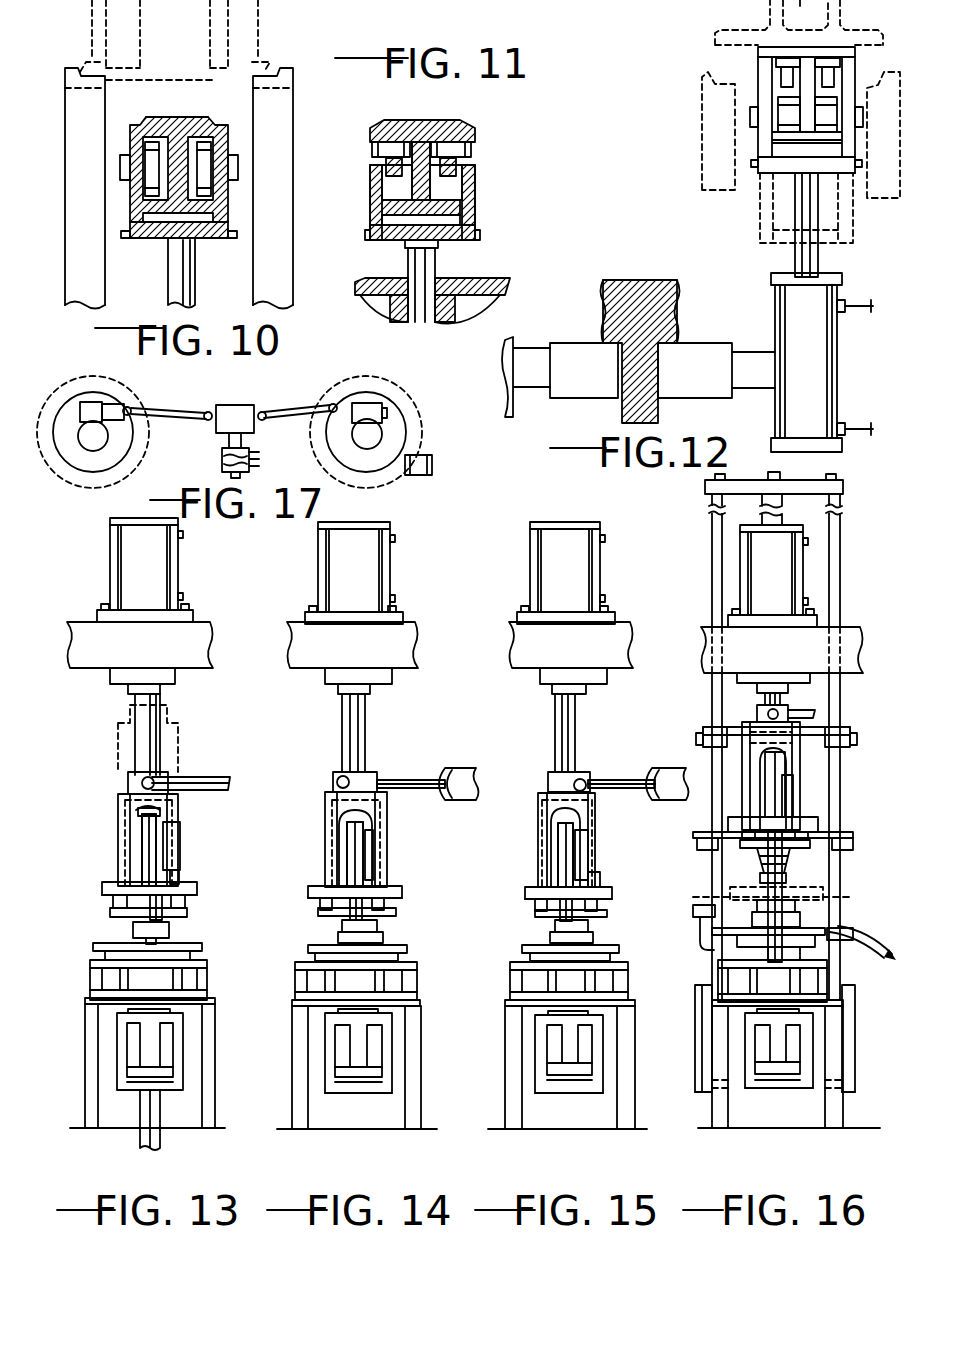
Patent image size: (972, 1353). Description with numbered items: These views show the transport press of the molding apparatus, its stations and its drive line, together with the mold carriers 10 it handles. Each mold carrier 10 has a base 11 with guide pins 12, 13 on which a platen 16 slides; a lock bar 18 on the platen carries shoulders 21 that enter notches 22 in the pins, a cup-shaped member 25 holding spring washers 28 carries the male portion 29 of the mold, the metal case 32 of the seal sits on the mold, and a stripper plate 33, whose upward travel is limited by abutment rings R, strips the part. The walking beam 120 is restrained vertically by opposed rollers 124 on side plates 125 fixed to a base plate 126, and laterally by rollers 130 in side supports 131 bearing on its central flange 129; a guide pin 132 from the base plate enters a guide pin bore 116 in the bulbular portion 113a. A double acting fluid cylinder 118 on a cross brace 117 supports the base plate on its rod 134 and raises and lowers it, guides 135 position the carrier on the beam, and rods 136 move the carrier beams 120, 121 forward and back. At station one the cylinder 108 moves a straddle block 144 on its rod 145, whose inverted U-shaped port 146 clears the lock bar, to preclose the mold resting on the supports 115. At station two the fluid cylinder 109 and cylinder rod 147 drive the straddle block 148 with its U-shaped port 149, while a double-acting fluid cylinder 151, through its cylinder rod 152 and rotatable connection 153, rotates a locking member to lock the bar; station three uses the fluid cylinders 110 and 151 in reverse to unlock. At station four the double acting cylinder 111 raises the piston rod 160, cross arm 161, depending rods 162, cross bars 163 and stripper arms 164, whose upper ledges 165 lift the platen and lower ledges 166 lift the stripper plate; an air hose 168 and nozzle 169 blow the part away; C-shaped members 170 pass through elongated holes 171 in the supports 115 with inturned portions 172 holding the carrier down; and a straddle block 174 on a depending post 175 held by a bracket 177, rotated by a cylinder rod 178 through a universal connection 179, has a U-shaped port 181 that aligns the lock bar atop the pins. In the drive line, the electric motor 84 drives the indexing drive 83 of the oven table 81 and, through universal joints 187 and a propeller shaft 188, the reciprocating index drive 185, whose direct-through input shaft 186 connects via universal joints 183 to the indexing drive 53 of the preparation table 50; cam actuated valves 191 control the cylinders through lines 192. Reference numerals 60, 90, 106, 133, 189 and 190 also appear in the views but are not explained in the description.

In FIG. 13, the mold carrier 10 is at (96, 949).
In FIG. 14, the mold carrier 10 is at (318, 945).
In FIG. 15, the mold carrier 10 is at (531, 943).
In FIG. 13, the base 11 is at (207, 978).
In FIG. 14, the base 11 is at (417, 983).
In FIG. 15, the base 11 is at (510, 982).
In FIG. 16, the base 11 is at (830, 976).
In FIG. 13, the guide pin 12 is at (148, 850).
In FIG. 14, the guide pin 12 is at (357, 841).
In FIG. 15, the guide pin 12 is at (565, 861).
In FIG. 13, the guide pin 13 is at (149, 850).
In FIG. 14, the guide pin 13 is at (355, 854).
In FIG. 15, the guide pin 13 is at (565, 855).
In FIG. 13, the platen 16 is at (197, 888).
In FIG. 14, the platen 16 is at (404, 892).
In FIG. 15, the platen 16 is at (612, 890).
In FIG. 16, the platen 16 is at (818, 826).
In FIG. 13, the lock bar 18 is at (182, 846).
In FIG. 14, the lock bar 18 is at (347, 866).
In FIG. 15, the lock bar 18 is at (588, 851).
In FIG. 16, the lock bar 18 is at (793, 772).
In FIG. 13, the shoulders 21 is at (192, 882).
In FIG. 14, the shoulders 21 is at (370, 884).
In FIG. 15, the shoulders 21 is at (600, 878).
In FIG. 16, the shoulders 21 is at (790, 810).
In FIG. 14, the notches 22 is at (386, 845).
In FIG. 16, the cup-shaped member 25 is at (764, 860).
In FIG. 13, the spring washers 28 is at (112, 903).
In FIG. 14, the spring washers 28 is at (320, 904).
In FIG. 16, the male portion 29 is at (760, 879).
In FIG. 13, the metal case 32 is at (133, 932).
In FIG. 14, the metal case 32 is at (383, 936).
In FIG. 15, the metal case 32 is at (593, 938).
In FIG. 16, the metal case 32 is at (768, 912).
In FIG. 15, the stripper plate 33 is at (522, 950).
In FIG. 16, the stripper plate 33 is at (712, 931).
In FIG. 17, the preparation table 50 is at (84, 490).
In FIG. 17, the indexing drive 53 is at (108, 446).
In FIG. 13, the drive coupling 60 is at (183, 1075).
In FIG. 14, the drive coupling 60 is at (392, 1074).
In FIG. 17, the oven table 81 is at (424, 428).
In FIG. 17, the indexing drive 83 is at (372, 470).
In FIG. 17, the electric motor 84 is at (426, 475).
In FIG. 15, the drive coupling 90 is at (534, 1062).
In FIG. 16, the drive coupling 90 is at (742, 1047).
In FIG. 13, the support plate 106 is at (160, 656).
In FIG. 14, the support plate 106 is at (370, 656).
In FIG. 15, the support plate 106 is at (586, 656).
In FIG. 16, the support plate 106 is at (798, 661).
In FIG. 13, the cylinder 108 is at (162, 582).
In FIG. 14, the fluid cylinder 109 is at (369, 584).
In FIG. 15, the fluid cylinder 110 is at (580, 584).
In FIG. 16, the double acting cylinder 111 is at (788, 587).
In FIG. 11, the bulbular portion 113a is at (462, 280).
In FIG. 10, the supports 115 is at (65, 76).
In FIG. 12, the supports 115 is at (700, 81).
In FIG. 13, the supports 115 is at (85, 1000).
In FIG. 14, the supports 115 is at (292, 1002).
In FIG. 15, the supports 115 is at (505, 1003).
In FIG. 16, the supports 115 is at (712, 1003).
In FIG. 11, the guide pin bore 116 is at (410, 305).
In FIG. 12, the cross braces 117 is at (622, 408).
In FIG. 12, the double acting fluid cylinder 118 is at (775, 320).
In FIG. 10, the walking beam 120 is at (176, 118).
In FIG. 11, the walking beam 120 is at (430, 117).
In FIG. 12, the walking beam 120 is at (779, 37).
In FIG. 13, the walking beam 120 is at (118, 1020).
In FIG. 14, the walking beam 120 is at (327, 1022).
In FIG. 15, the carrier beam 121 is at (536, 1022).
In FIG. 16, the carrier beam 121 is at (745, 1024).
In FIG. 10, the opposed rollers 124 is at (152, 152).
In FIG. 10, the side plates 125 is at (133, 212).
In FIG. 11, the side plates 125 is at (372, 200).
In FIG. 10, the base plate 126 is at (203, 240).
In FIG. 11, the base plate 126 is at (400, 248).
In FIG. 12, the base plate 126 is at (786, 174).
In FIG. 16, the base plate 126 is at (757, 1092).
In FIG. 11, the central flange 129 is at (425, 190).
In FIG. 11, the rollers 130 is at (372, 149).
In FIG. 11, the side supports 131 is at (386, 172).
In FIG. 10, the guide pin 132 is at (178, 284).
In FIG. 11, the guide pin 132 is at (432, 262).
In FIG. 12, the housing 133 is at (819, 5).
In FIG. 12, the rod 134 is at (795, 259).
In FIG. 10, the guides 135 is at (163, 117).
In FIG. 11, the guides 135 is at (410, 120).
In FIG. 16, the rods 136 is at (828, 928).
In FIG. 13, the straddle block 144 is at (118, 832).
In FIG. 13, the rod 145 is at (130, 734).
In FIG. 13, the inverted U-shaped port 146 is at (165, 818).
In FIG. 14, the cylinder rod 147 is at (342, 714).
In FIG. 14, the straddle block 148 is at (380, 802).
In FIG. 15, the straddle block 148 is at (590, 804).
In FIG. 14, the U-shaped port 149 is at (349, 812).
In FIG. 15, the U-shaped port 149 is at (560, 814).
In FIG. 14, the double-acting fluid cylinder 151 is at (490, 735).
In FIG. 15, the double-acting fluid cylinder 151 is at (678, 749).
In FIG. 13, the cylinder rod 152 is at (200, 777).
In FIG. 14, the cylinder rod 152 is at (398, 778).
In FIG. 15, the cylinder rod 152 is at (606, 778).
In FIG. 13, the rotatable connection 153 is at (128, 786).
In FIG. 14, the rotatable connection 153 is at (334, 780).
In FIG. 16, the piston rod 160 is at (765, 493).
In FIG. 16, the cross arm 161 is at (815, 484).
In FIG. 16, the depending rods 162 is at (713, 576).
In FIG. 16, the cross bars 163 is at (818, 733).
In FIG. 16, the stripper arms 164 is at (801, 771).
In FIG. 16, the upper ledges 165 is at (710, 846).
In FIG. 16, the lower ledges 166 is at (860, 926).
In FIG. 16, the air hose 168 is at (698, 949).
In FIG. 16, the nozzle 169 is at (693, 907).
In FIG. 16, the C-shaped members 170 is at (850, 1040).
In FIG. 16, the elongated holes 171 is at (712, 1089).
In FIG. 16, the inturned portions 172 is at (712, 985).
In FIG. 16, the straddle block 174 is at (740, 732).
In FIG. 16, the depending post 175 is at (788, 688).
In FIG. 16, the bracket 177 is at (737, 678).
In FIG. 16, the cylinder rod 178 is at (765, 699).
In FIG. 16, the universal connection 179 is at (757, 714).
In FIG. 17, the U-shaped port 181 is at (82, 392).
In FIG. 16, the U-shaped port 181 is at (760, 812).
In FIG. 17, the universal joints 183 is at (207, 408).
In FIG. 17, the reciprocating index drive 185 is at (246, 406).
In FIG. 17, the direct-through input shaft 186 is at (212, 396).
In FIG. 17, the universal joints 187 is at (262, 422).
In FIG. 17, the propeller shaft 188 is at (322, 406).
In FIG. 17, the block 189 is at (384, 404).
In FIG. 17, the stem 190 is at (229, 441).
In FIG. 17, the cam actuated valves 191 is at (222, 468).
In FIG. 17, the lines 192 is at (260, 463).
In FIG. 15, the abutment rings R is at (535, 918).
In FIG. 16, the abutment rings R is at (788, 900).